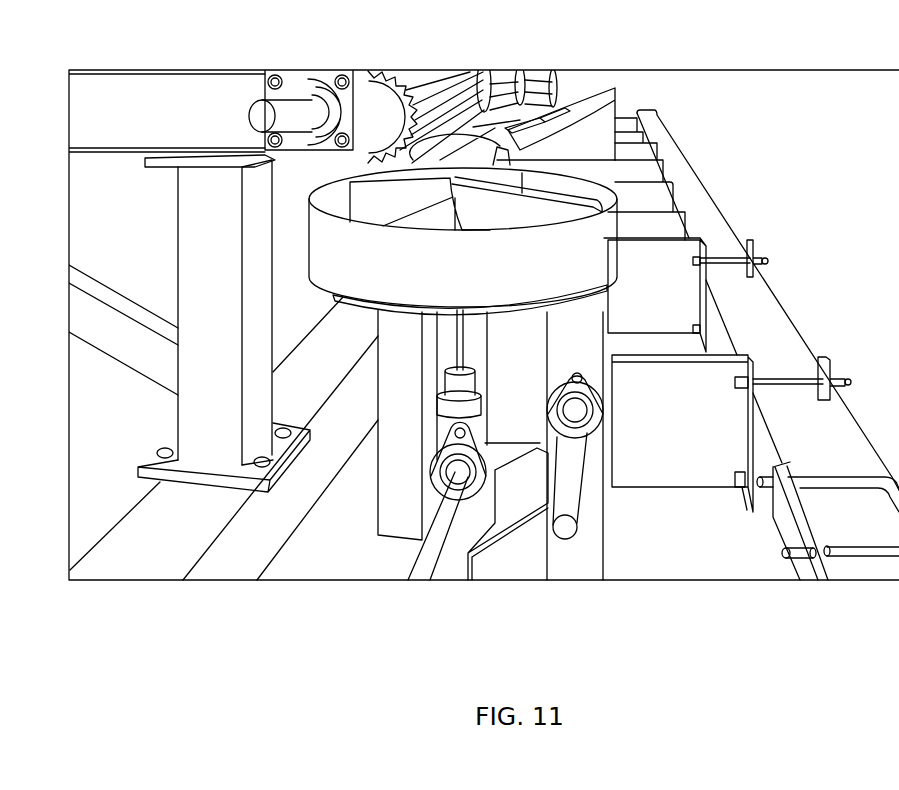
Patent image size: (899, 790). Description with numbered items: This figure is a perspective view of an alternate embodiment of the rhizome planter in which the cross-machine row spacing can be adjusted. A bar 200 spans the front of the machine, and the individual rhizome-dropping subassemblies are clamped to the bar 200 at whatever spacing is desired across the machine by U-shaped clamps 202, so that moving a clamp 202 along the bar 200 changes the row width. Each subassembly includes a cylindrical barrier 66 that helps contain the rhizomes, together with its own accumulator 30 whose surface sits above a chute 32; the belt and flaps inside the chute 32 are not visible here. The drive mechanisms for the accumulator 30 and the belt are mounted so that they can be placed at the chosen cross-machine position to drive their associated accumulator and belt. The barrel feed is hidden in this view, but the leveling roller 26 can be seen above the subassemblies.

The leveling roller 26 is at (460, 93).
The accumulator 30 is at (603, 128).
The cylindrical barrier 66 is at (588, 238).
The chute 32 is at (668, 227).
The bar 200 is at (763, 317).
The U-shaped clamp 202 is at (725, 257).